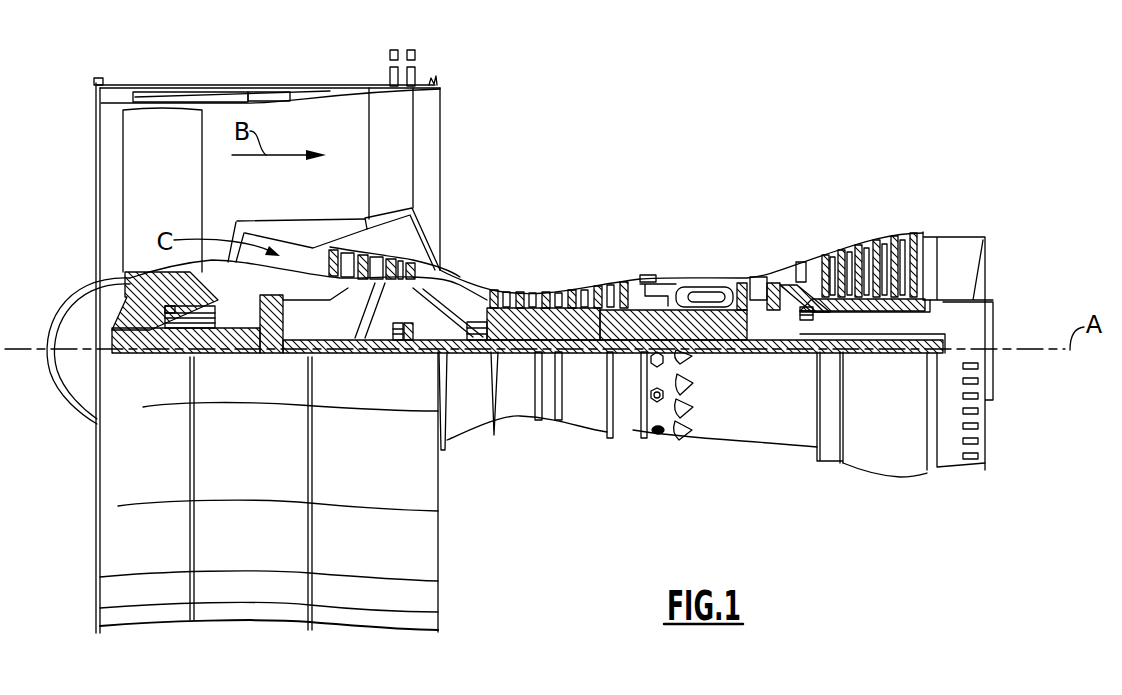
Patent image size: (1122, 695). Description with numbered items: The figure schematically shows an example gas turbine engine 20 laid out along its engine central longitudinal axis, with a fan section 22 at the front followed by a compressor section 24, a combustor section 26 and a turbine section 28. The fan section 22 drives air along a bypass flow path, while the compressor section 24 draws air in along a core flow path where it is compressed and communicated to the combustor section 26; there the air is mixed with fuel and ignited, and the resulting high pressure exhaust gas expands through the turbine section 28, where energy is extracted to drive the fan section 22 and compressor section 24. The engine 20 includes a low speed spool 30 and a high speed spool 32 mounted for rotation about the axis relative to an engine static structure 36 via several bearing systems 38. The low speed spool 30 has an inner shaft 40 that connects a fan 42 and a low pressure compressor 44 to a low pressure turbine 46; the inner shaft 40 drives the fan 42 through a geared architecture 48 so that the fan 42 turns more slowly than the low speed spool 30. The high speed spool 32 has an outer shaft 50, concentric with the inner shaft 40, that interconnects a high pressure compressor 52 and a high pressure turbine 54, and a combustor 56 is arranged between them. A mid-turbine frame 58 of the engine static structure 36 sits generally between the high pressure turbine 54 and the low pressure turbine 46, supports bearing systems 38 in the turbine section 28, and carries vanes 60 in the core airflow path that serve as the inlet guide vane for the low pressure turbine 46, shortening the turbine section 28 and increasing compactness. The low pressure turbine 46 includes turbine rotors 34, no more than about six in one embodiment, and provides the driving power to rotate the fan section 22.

The gas turbine engine 20 is at (702, 133).
The fan section 22 is at (295, 63).
The compressor section 24 is at (305, 197).
The combustor section 26 is at (693, 197).
The turbine section 28 is at (788, 197).
The low speed spool 30 is at (587, 366).
The high speed spool 32 is at (628, 282).
The turbine rotors 34 is at (889, 313).
The engine static structure 36 is at (626, 446).
The bearing systems 38 is at (174, 353).
The inner shaft 40 is at (455, 353).
The fan 42 is at (177, 205).
The low pressure compressor section 44 is at (377, 258).
The low pressure turbine section 46 is at (878, 245).
The geared architecture 48 is at (281, 338).
The outer shaft 50 is at (702, 335).
The high pressure compressor section 52 is at (567, 330).
The high pressure turbine section 54 is at (757, 276).
The combustor 56 is at (695, 298).
The mid-turbine frame 58 is at (800, 262).
The vanes 60 is at (827, 327).